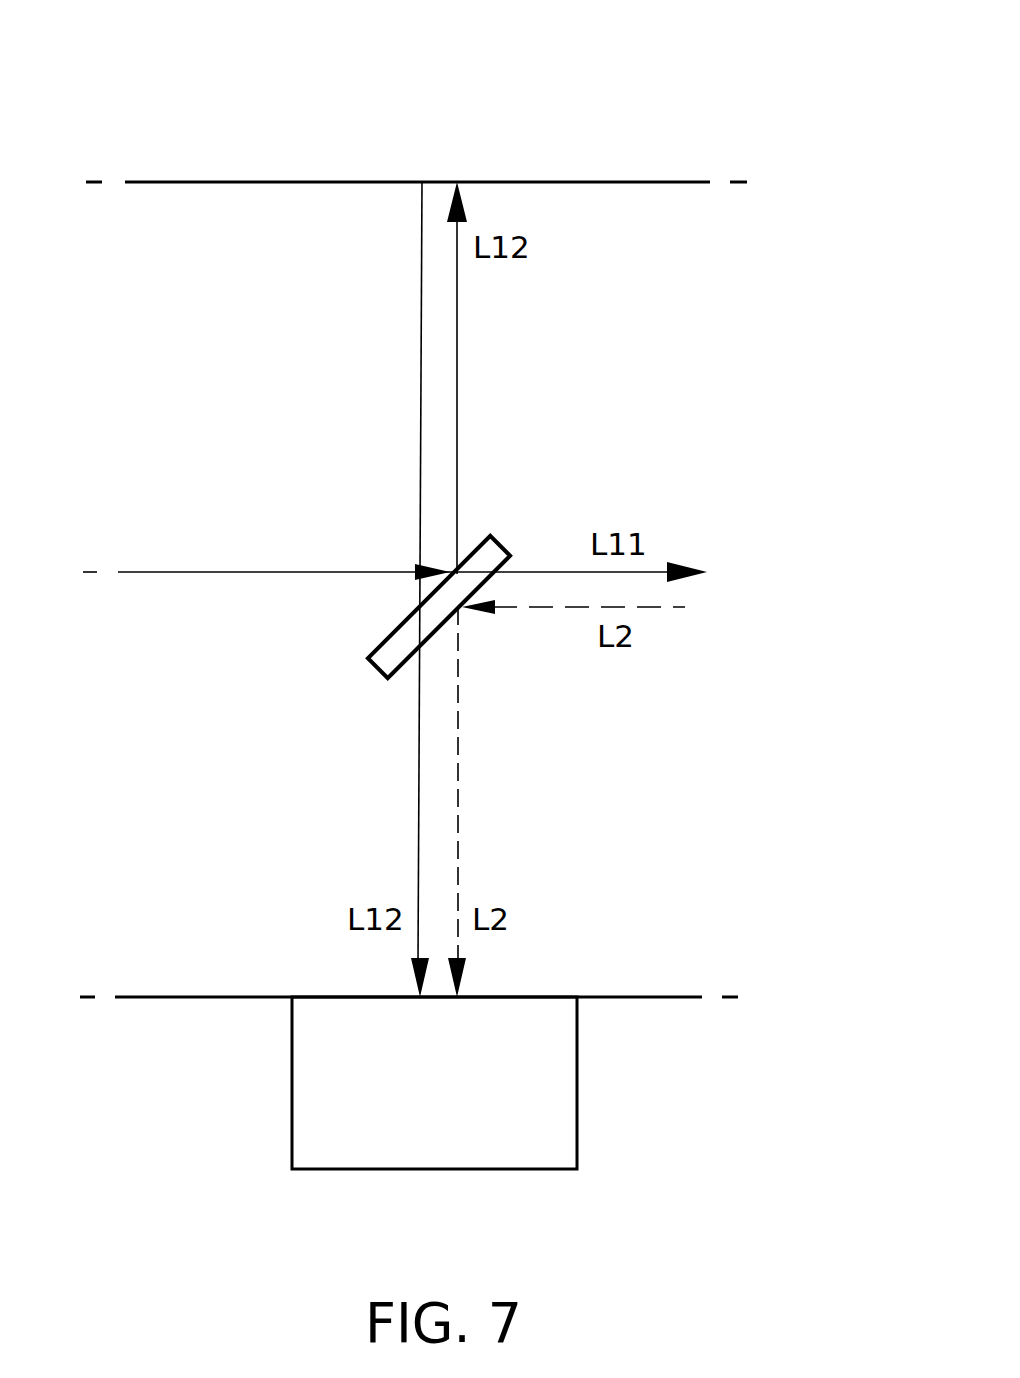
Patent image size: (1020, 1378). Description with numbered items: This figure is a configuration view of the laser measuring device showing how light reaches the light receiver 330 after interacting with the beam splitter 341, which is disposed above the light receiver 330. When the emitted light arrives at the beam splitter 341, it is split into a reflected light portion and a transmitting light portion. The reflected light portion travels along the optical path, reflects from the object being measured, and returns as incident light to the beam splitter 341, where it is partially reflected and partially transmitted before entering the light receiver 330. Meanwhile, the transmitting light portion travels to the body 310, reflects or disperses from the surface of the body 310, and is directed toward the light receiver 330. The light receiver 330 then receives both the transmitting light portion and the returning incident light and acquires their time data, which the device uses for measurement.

The body 310 is at (578, 183).
The beam splitter 341 is at (500, 540).
The light receiver 330 is at (552, 1110).